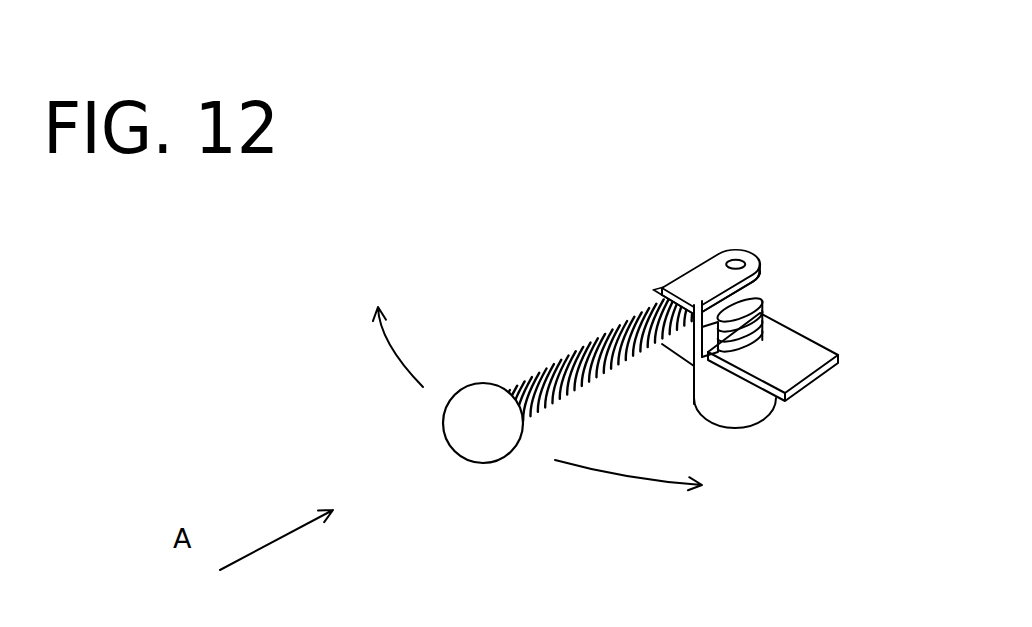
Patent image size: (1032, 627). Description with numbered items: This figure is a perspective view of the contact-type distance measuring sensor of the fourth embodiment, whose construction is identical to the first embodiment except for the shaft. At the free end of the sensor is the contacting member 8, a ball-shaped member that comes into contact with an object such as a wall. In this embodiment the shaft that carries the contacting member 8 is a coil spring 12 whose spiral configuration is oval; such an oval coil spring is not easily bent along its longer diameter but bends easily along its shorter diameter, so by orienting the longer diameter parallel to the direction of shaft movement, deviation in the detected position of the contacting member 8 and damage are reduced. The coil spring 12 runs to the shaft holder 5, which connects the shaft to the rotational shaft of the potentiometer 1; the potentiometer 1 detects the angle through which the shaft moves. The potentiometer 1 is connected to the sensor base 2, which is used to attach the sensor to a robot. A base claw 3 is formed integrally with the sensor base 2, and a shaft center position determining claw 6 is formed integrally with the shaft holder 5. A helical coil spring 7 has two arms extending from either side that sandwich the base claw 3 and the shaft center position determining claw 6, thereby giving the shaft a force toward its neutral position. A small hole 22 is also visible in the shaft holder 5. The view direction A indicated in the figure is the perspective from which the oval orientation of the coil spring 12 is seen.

The potentiometer 1 is at (757, 410).
The sensor base 2 is at (805, 355).
The base claw 3 is at (707, 378).
The shaft holder 5 is at (695, 277).
The shaft center position determining claw 6 is at (670, 358).
The helical coil spring 7 is at (763, 307).
The contacting member 8 is at (462, 443).
The coil spring 12 is at (590, 340).
The hole 22 is at (736, 261).